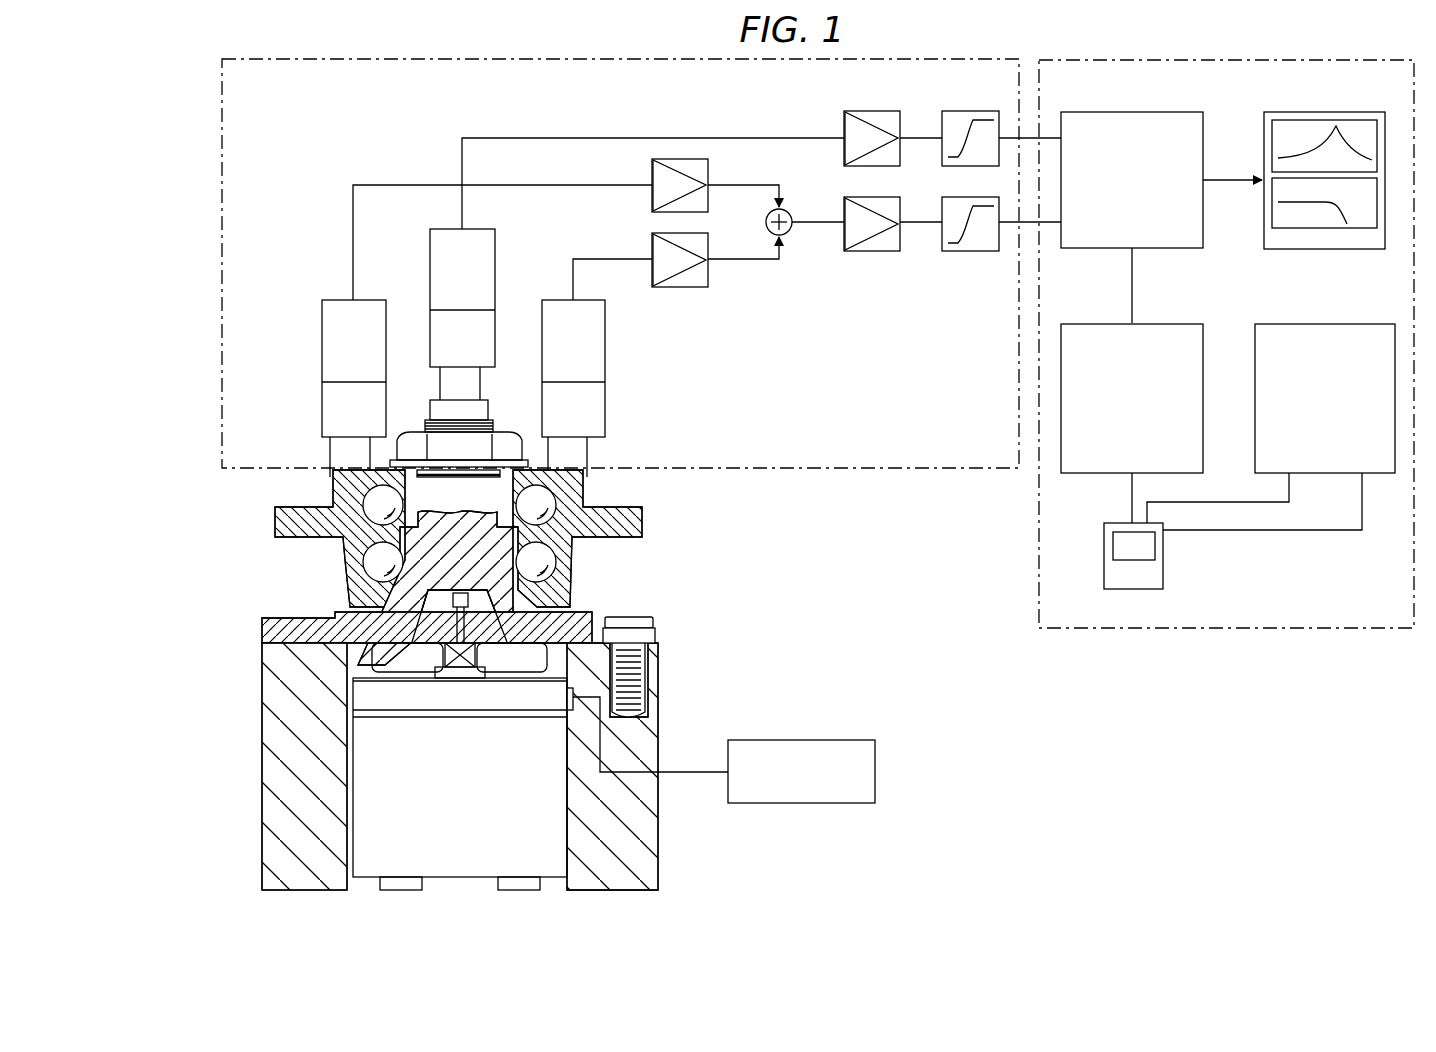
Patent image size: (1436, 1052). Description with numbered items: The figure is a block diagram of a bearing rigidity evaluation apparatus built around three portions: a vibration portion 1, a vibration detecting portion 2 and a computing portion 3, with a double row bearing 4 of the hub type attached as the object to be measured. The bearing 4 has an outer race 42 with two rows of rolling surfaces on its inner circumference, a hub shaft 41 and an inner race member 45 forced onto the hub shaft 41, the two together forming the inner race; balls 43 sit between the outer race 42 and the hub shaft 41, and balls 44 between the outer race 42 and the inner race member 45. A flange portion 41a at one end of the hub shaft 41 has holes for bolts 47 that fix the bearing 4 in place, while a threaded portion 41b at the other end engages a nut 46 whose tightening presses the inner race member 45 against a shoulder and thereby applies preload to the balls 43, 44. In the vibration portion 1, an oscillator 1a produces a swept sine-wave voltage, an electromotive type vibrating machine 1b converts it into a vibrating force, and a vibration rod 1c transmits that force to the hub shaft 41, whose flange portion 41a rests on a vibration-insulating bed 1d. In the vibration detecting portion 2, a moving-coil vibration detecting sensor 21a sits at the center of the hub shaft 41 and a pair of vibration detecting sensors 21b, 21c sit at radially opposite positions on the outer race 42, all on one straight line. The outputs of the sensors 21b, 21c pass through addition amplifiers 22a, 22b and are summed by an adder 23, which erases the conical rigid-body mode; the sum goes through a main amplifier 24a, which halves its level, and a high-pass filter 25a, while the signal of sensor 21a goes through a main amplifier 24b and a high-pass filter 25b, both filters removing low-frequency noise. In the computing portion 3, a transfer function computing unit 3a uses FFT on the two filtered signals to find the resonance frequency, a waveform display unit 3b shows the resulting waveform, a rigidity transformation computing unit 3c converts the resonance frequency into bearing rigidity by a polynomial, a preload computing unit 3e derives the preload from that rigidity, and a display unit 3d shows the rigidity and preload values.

The vibration portion 1 is at (663, 695).
The oscillator 1a is at (877, 772).
The electromotive type vibrating machine 1b is at (555, 842).
The vibration rod 1c is at (452, 627).
The vibration-insulating bed 1d is at (262, 755).
The vibration detecting portion 2 is at (221, 91).
The computing portion 3 is at (1232, 628).
The transfer function computing unit 3a is at (1132, 112).
The waveform display unit 3b is at (1325, 112).
The rigidity transformation computing unit 3c is at (1175, 323).
The display unit 3d is at (1163, 555).
The preload computing unit 3e is at (1323, 323).
The double row bearing 4 is at (660, 537).
The vibration detecting sensor 21a is at (480, 229).
The vibration detecting sensor 21b is at (605, 412).
The vibration detecting sensor 21c is at (322, 410).
The addition amplifier 22a is at (680, 287).
The addition amplifier 22b is at (708, 164).
The adder 23 is at (792, 213).
The main amplifier 24a is at (875, 251).
The main amplifier 24b is at (882, 98).
The high-pass filter 25a is at (972, 251).
The high-pass filter 25b is at (990, 98).
The hub shaft 41 is at (410, 593).
The flange portion 41a is at (657, 633).
The threaded portion 41b is at (422, 424).
The outer race 42 is at (642, 515).
The balls 43 is at (545, 560).
The balls 44 is at (545, 497).
The inner race member 45 is at (388, 475).
The nut 46 is at (510, 450).
The bolts 47 is at (628, 613).